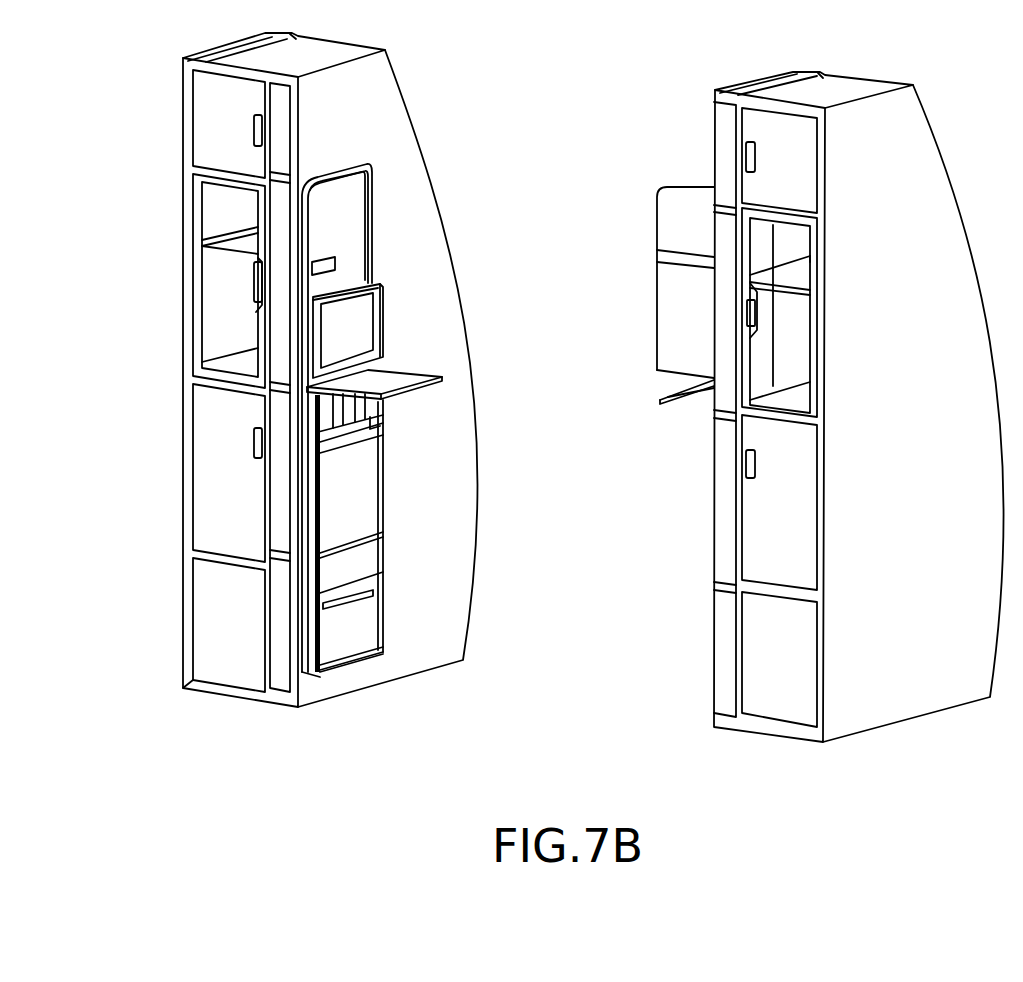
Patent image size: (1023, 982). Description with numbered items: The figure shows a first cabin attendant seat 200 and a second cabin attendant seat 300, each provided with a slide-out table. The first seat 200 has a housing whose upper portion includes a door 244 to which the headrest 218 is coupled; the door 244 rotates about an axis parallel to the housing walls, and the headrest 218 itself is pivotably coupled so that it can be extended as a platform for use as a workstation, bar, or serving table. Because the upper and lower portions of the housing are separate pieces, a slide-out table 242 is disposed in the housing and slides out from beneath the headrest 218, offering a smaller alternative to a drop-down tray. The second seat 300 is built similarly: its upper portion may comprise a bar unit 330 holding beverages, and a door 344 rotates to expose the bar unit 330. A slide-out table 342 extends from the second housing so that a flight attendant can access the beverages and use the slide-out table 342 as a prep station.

The first seat 200 is at (264, 370).
The door 244 is at (347, 245).
The headrest 218 is at (370, 327).
The slide-out table 242 is at (383, 388).
The second seat 300 is at (793, 394).
The door 344 is at (698, 228).
The bar unit 330 is at (800, 338).
The slide-out table 342 is at (700, 393).